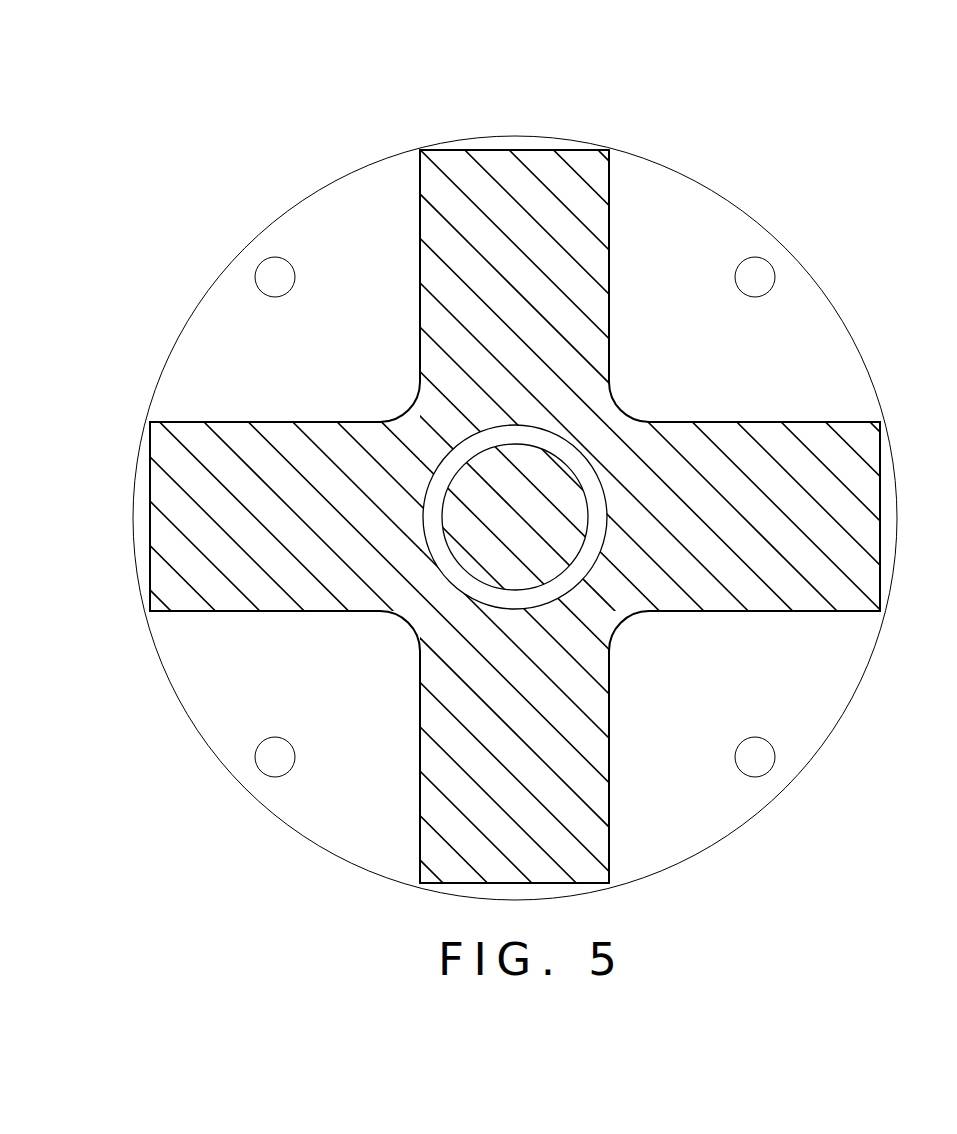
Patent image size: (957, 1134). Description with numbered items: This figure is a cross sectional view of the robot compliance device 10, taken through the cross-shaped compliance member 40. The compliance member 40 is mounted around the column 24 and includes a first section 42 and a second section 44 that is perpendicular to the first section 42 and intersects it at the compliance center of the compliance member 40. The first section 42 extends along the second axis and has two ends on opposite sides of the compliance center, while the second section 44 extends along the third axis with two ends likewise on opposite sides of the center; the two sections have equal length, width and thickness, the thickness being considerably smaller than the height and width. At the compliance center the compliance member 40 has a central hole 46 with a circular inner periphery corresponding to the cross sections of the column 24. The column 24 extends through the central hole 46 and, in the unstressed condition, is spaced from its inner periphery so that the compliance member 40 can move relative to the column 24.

The robot compliance device 10 is at (290, 148).
The column 24 is at (497, 548).
The compliance member 40 is at (845, 465).
The first section 42 is at (243, 443).
The second section 44 is at (533, 183).
The central hole 46 is at (577, 570).